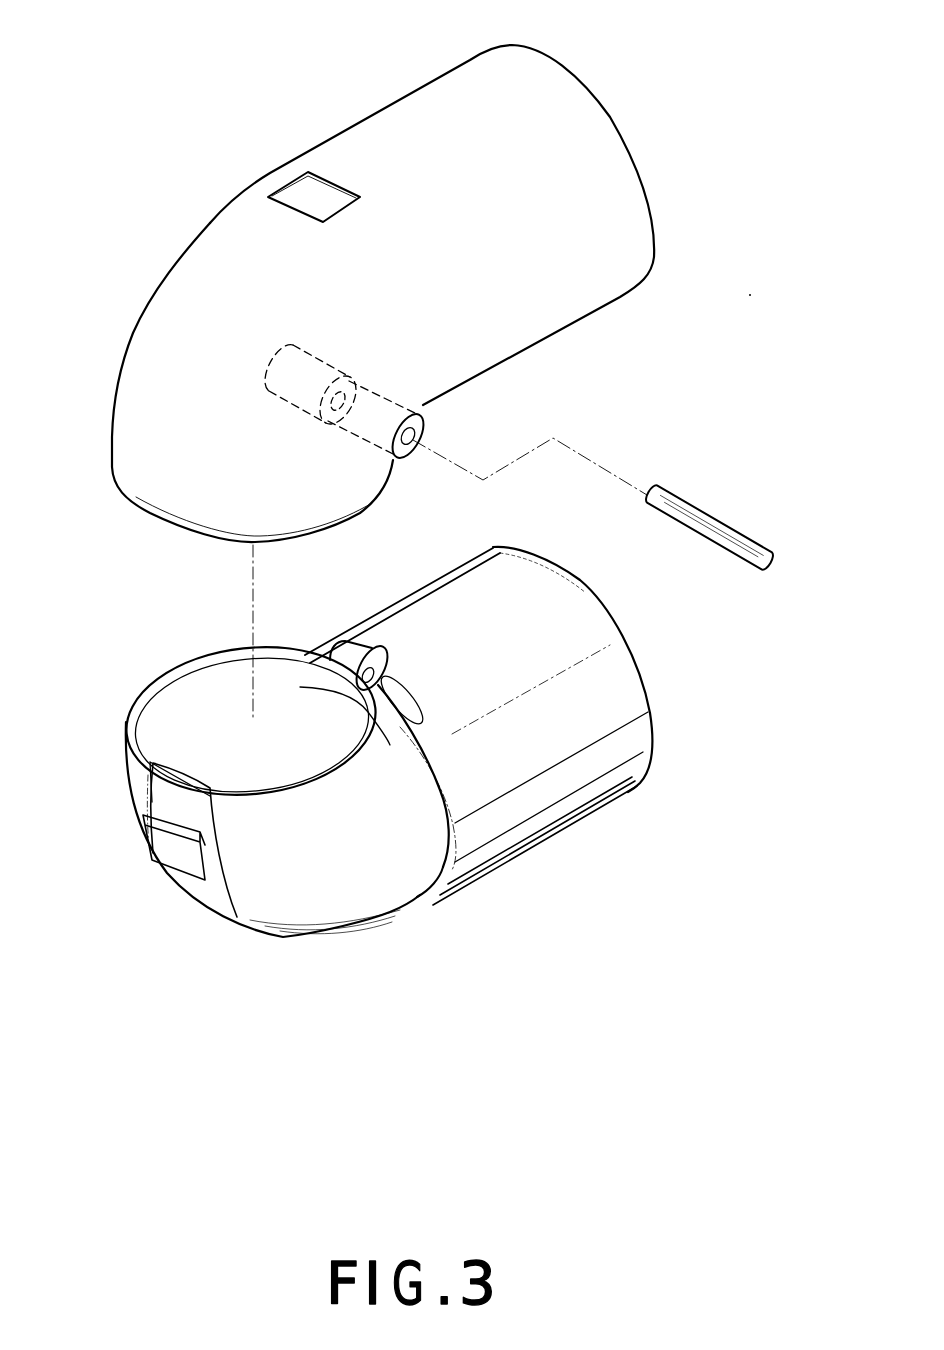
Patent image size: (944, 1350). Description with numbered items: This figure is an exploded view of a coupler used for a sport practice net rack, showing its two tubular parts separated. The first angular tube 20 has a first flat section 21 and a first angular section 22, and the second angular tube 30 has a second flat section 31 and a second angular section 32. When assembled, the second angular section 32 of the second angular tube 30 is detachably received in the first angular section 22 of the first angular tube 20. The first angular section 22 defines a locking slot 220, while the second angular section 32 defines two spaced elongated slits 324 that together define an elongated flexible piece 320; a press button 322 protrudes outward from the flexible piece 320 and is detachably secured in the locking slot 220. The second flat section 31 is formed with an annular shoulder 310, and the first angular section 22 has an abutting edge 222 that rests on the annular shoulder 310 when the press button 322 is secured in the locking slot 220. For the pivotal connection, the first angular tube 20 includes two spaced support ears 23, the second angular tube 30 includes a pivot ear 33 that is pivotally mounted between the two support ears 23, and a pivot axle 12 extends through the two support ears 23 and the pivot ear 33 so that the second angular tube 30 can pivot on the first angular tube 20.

The pivot axle 12 is at (709, 520).
The first angular tube 20 is at (362, 311).
The first flat section 21 is at (453, 86).
The first angular section 22 is at (114, 416).
The locking slot 220 is at (298, 182).
The abutting edge 222 is at (202, 540).
The support ears 23 is at (420, 418).
The second angular tube 30 is at (356, 796).
The second flat section 31 is at (593, 807).
The annular shoulder 310 is at (440, 889).
The second angular section 32 is at (293, 923).
The elongated flexible piece 320 is at (167, 790).
The press button 322 is at (167, 857).
The elongated slits 324 is at (143, 777).
The pivot ear 33 is at (380, 660).